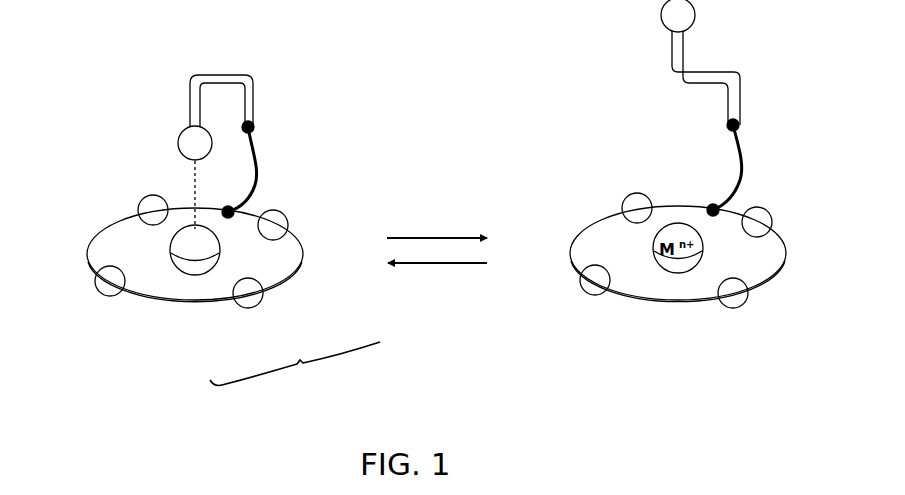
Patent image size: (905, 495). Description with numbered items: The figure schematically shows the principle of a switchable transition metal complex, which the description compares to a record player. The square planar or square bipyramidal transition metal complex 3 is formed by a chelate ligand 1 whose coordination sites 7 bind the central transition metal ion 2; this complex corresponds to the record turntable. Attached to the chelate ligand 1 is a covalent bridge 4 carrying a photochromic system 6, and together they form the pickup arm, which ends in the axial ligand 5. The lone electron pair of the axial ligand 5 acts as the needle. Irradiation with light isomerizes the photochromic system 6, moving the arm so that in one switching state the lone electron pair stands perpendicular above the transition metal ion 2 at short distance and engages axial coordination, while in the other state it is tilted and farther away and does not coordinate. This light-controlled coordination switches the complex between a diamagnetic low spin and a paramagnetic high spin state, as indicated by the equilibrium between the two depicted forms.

The chelate ligand 1 is at (289, 276).
The transition metal ion 2 is at (199, 270).
The square planar or square bipyramidal transition metal complex 3 is at (295, 369).
The bridge 4 is at (263, 165).
The axial ligand 5 is at (173, 138).
The photochromic system 6 is at (249, 65).
The coordination site on the chelate ligand 7 is at (101, 296).